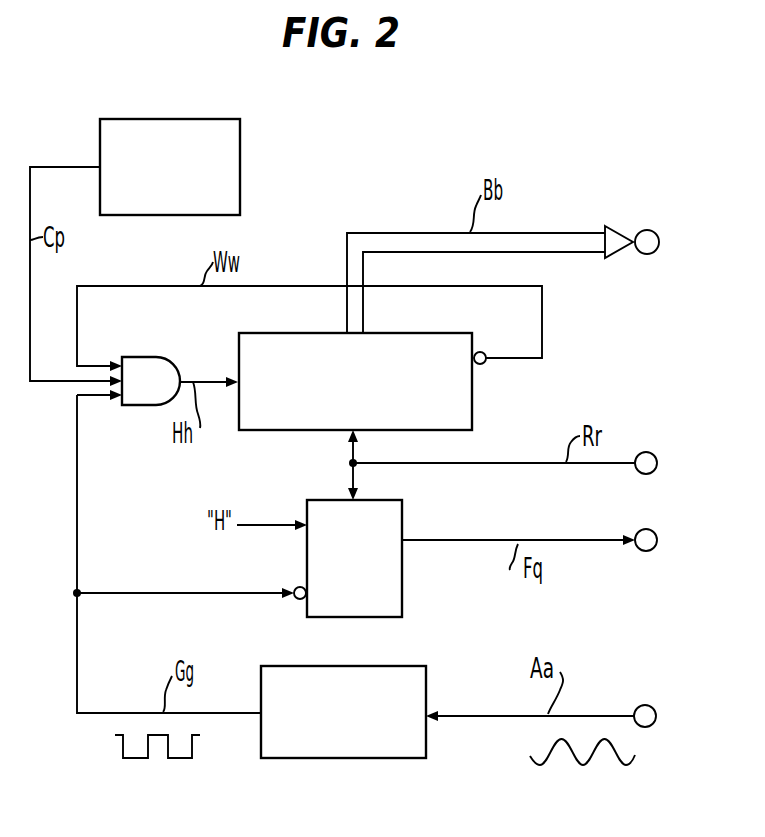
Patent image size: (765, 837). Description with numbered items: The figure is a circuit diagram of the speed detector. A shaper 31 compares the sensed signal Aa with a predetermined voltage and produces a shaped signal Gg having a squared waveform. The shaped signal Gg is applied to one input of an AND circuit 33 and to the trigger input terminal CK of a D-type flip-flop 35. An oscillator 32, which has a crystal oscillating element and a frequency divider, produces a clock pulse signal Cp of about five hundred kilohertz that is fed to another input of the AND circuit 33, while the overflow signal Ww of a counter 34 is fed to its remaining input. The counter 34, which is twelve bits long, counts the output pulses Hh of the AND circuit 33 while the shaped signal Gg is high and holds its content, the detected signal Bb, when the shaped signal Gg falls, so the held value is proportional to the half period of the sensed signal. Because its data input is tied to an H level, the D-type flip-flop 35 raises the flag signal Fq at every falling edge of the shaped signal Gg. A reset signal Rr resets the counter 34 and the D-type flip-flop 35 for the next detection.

The shaper 31 is at (402, 758).
The oscillator 32 is at (240, 130).
The AND circuit 33 is at (160, 357).
The counter 34 is at (472, 408).
The D-type flip-flop 35 is at (402, 593).